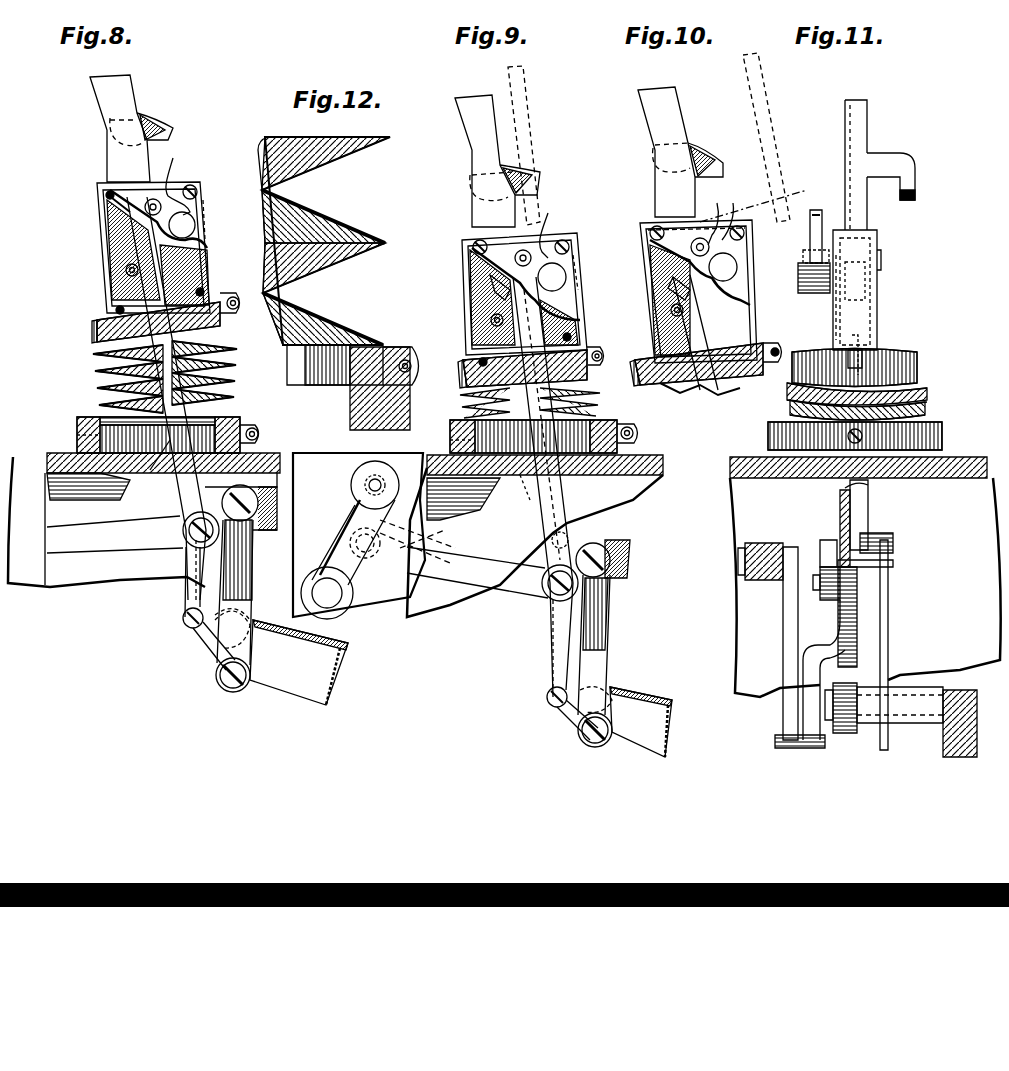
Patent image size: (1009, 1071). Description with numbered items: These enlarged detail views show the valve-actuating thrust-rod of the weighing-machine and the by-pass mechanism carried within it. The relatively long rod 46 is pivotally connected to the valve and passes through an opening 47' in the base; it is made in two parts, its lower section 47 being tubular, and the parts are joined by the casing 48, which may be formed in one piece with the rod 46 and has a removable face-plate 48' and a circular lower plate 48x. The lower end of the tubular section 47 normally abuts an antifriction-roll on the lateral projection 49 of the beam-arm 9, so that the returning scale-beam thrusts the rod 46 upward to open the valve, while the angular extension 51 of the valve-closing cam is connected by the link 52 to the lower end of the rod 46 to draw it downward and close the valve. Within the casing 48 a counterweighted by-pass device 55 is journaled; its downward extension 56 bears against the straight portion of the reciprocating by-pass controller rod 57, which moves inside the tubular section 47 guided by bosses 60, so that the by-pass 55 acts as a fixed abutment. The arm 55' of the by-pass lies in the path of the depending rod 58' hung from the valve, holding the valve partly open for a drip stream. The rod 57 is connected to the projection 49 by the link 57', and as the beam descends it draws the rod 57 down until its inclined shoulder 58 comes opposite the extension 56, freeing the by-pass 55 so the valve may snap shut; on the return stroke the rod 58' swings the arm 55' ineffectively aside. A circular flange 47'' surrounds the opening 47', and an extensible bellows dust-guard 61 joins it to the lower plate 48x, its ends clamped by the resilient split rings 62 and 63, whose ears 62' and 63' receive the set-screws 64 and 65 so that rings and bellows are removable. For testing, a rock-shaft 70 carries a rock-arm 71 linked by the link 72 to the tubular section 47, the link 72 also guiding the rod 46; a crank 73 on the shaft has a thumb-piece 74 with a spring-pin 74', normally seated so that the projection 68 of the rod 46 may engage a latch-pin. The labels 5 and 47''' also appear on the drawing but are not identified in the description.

In FIG. 8, the frame plate 5 is at (280, 460).
In FIG. 9, the frame plate 5 is at (733, 465).
In FIG. 11, the frame plate 5 is at (865, 577).
In FIG. 8, the beam-arm 9 is at (299, 662).
In FIG. 9, the beam-arm 9 is at (640, 695).
In FIG. 11, the beam-arm 9 is at (977, 715).
In FIG. 8, the rod 46 is at (100, 100).
In FIG. 9, the rod 46 is at (470, 140).
In FIG. 10, the rod 46 is at (670, 123).
In FIG. 11, the rod 46 is at (860, 122).
In FIG. 8, the lower section 47 is at (176, 541).
In FIG. 9, the lower section 47 is at (575, 592).
In FIG. 11, the lower section 47 is at (879, 613).
In FIG. 8, the opening 47' is at (127, 426).
In FIG. 9, the opening 47' is at (463, 502).
In FIG. 9, the circular flange 47'' is at (439, 444).
In FIG. 8, the bushing collar 47''' is at (53, 439).
In FIG. 8, the casing 48 is at (128, 248).
In FIG. 9, the casing 48 is at (505, 299).
In FIG. 10, the casing 48 is at (678, 291).
In FIG. 11, the casing 48 is at (870, 290).
In FIG. 8, the face-plate 48' is at (221, 217).
In FIG. 9, the face-plate 48' is at (591, 272).
In FIG. 10, the face-plate 48' is at (678, 212).
In FIG. 11, the face-plate 48' is at (815, 297).
In FIG. 8, the lower plate 48x is at (95, 328).
In FIG. 9, the lower plate 48x is at (465, 372).
In FIG. 10, the lower plate 48x is at (740, 370).
In FIG. 8, the lateral projection 49 is at (215, 637).
In FIG. 9, the lateral projection 49 is at (575, 710).
In FIG. 11, the lateral projection 49 is at (888, 723).
In FIG. 8, the angular extension 51 is at (258, 522).
In FIG. 9, the angular extension 51 is at (625, 556).
In FIG. 11, the angular extension 51 is at (762, 547).
In FIG. 8, the link 52 is at (242, 585).
In FIG. 9, the link 52 is at (603, 635).
In FIG. 11, the link 52 is at (788, 620).
In FIG. 8, the by-pass device 55 is at (139, 186).
In FIG. 9, the by-pass device 55 is at (558, 250).
In FIG. 10, the by-pass device 55 is at (737, 248).
In FIG. 11, the by-pass device 55 is at (796, 267).
In FIG. 8, the arm of the by-pass 55' is at (190, 166).
In FIG. 9, the arm of the by-pass 55' is at (562, 218).
In FIG. 10, the arm of the by-pass 55' is at (750, 219).
In FIG. 11, the arm of the by-pass 55' is at (794, 231).
In FIG. 8, the downward extension 56 is at (152, 230).
In FIG. 9, the downward extension 56 is at (520, 285).
In FIG. 10, the downward extension 56 is at (655, 256).
In FIG. 8, the by-pass controller 57 is at (138, 363).
In FIG. 9, the by-pass controller 57 is at (560, 430).
In FIG. 10, the by-pass controller 57 is at (700, 332).
In FIG. 11, the by-pass controller 57 is at (882, 515).
In FIG. 8, the link 57' is at (166, 587).
In FIG. 9, the link 57' is at (536, 653).
In FIG. 11, the link 57' is at (892, 641).
In FIG. 8, the inclined shoulder 58 is at (91, 210).
In FIG. 9, the inclined shoulder 58 is at (466, 282).
In FIG. 10, the inclined shoulder 58 is at (649, 285).
In FIG. 9, the depending rod 58' is at (537, 145).
In FIG. 10, the depending rod 58' is at (760, 137).
In FIG. 8, the bosses 60 is at (125, 470).
In FIG. 9, the bosses 60 is at (555, 483).
In FIG. 8, the dust-guard 61 is at (222, 382).
In FIG. 12, the dust-guard 61 is at (324, 241).
In FIG. 9, the dust-guard 61 is at (475, 410).
In FIG. 10, the dust-guard 61 is at (672, 392).
In FIG. 11, the dust-guard 61 is at (920, 400).
In FIG. 8, the split annular ring 62 is at (139, 332).
In FIG. 9, the split annular ring 62 is at (506, 371).
In FIG. 10, the split annular ring 62 is at (682, 365).
In FIG. 11, the split annular ring 62 is at (865, 361).
In FIG. 8, the ear 62' is at (237, 292).
In FIG. 9, the ear 62' is at (606, 346).
In FIG. 10, the ear 62' is at (775, 338).
In FIG. 11, the ear 62' is at (898, 343).
In FIG. 8, the split annular ring 63 is at (126, 430).
In FIG. 12, the split annular ring 63 is at (353, 376).
In FIG. 9, the split annular ring 63 is at (518, 435).
In FIG. 11, the split annular ring 63 is at (837, 436).
In FIG. 8, the ear 63' is at (267, 419).
In FIG. 9, the ear 63' is at (633, 421).
In FIG. 11, the ear 63' is at (880, 518).
In FIG. 8, the set-screw 64 is at (236, 308).
In FIG. 9, the set-screw 64 is at (603, 355).
In FIG. 11, the set-screw 64 is at (855, 352).
In FIG. 8, the set-screw 65 is at (258, 437).
In FIG. 12, the set-screw 65 is at (398, 370).
In FIG. 9, the set-screw 65 is at (634, 433).
In FIG. 11, the set-screw 65 is at (845, 445).
In FIG. 8, the projection 68 is at (150, 122).
In FIG. 9, the projection 68 is at (528, 176).
In FIG. 10, the projection 68 is at (712, 167).
In FIG. 11, the projection 68 is at (910, 183).
In FIG. 8, the rock-shaft 70 is at (325, 605).
In FIG. 8, the rock-arm 71 is at (342, 540).
In FIG. 8, the link 72 is at (95, 540).
In FIG. 9, the link 72 is at (470, 570).
In FIG. 11, the link 72 is at (828, 560).
In FIG. 8, the crank 73 is at (355, 520).
In FIG. 8, the thumb-piece 74 is at (362, 484).
In FIG. 8, the spring-pin 74' is at (371, 463).